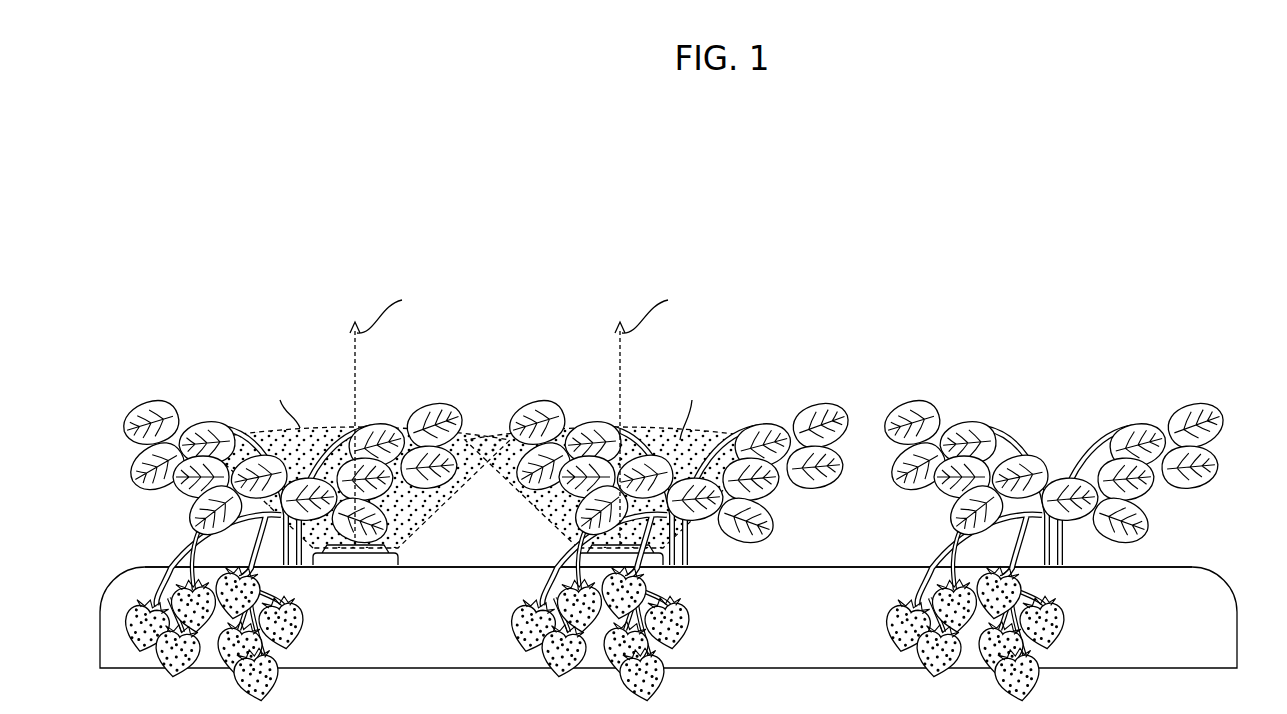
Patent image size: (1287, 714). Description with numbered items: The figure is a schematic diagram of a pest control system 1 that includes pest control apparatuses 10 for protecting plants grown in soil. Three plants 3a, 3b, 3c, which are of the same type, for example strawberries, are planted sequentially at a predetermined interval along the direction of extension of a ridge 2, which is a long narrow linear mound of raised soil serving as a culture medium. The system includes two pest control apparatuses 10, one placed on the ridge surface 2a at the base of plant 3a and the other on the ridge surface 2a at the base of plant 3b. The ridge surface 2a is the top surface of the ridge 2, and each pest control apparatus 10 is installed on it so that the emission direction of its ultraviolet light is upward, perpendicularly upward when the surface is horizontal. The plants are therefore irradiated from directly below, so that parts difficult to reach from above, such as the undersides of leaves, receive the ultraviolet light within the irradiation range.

The pest control system 1 is at (685, 486).
The ridge 2 is at (1218, 636).
The ridge surface 2a is at (812, 560).
The plant 3a is at (215, 428).
The plant 3b is at (765, 425).
The plant 3c is at (1137, 427).
The pest control apparatus 10 is at (385, 558).